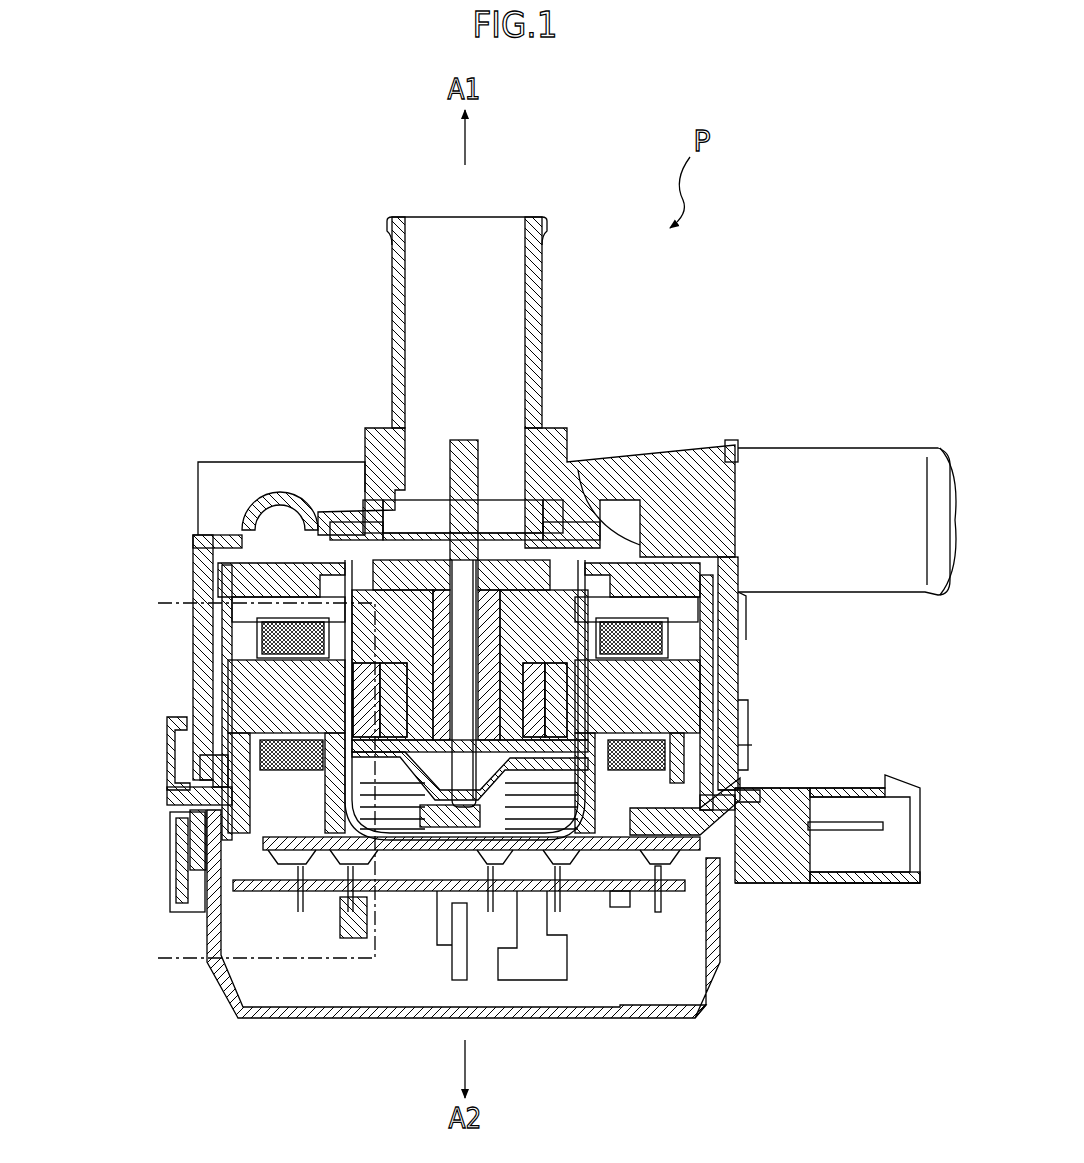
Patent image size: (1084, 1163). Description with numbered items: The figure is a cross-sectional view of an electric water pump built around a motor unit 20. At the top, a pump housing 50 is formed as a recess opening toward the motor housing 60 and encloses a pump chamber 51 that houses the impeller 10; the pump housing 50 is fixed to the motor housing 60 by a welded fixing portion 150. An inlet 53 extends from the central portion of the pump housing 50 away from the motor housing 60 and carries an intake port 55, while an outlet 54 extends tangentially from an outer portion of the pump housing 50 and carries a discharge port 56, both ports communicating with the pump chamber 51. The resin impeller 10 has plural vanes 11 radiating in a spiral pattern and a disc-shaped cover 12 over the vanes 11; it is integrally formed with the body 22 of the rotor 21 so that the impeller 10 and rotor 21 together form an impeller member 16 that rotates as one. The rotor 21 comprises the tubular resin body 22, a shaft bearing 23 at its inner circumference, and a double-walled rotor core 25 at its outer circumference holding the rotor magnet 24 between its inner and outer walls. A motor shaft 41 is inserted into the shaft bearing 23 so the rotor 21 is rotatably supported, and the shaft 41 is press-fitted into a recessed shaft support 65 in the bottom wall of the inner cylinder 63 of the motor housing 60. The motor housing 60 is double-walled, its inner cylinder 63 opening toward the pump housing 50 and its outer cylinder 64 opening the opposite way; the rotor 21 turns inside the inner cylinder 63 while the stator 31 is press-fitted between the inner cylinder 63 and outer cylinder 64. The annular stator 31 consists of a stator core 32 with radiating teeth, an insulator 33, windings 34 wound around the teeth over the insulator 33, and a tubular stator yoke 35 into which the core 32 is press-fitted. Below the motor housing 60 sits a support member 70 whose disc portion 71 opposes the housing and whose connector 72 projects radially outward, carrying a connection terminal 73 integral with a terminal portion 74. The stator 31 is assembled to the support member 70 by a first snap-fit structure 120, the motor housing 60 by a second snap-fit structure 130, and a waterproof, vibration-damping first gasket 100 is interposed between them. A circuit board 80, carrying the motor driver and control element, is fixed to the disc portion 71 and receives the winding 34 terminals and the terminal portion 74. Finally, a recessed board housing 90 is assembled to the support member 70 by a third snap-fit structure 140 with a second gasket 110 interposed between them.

The impeller 10 is at (500, 485).
The vanes 11 is at (628, 510).
The cover 12 is at (576, 462).
The impeller member 16 is at (318, 556).
The motor unit 20 is at (95, 610).
The rotor 21 is at (240, 680).
The body 22 is at (600, 600).
The shaft bearing 23 is at (600, 640).
The rotor magnet 24 is at (560, 690).
The rotor core 25 is at (560, 702).
The stator 31 is at (232, 700).
The stator core 32 is at (265, 635).
The insulator 33 is at (235, 600).
The windings 34 is at (200, 533).
The stator yoke 35 is at (232, 632).
The motor shaft 41 is at (436, 490).
The pump housing 50 is at (745, 470).
The pump chamber 51 is at (335, 490).
The inlet 53 is at (542, 300).
The outlet 54 is at (858, 448).
The intake port 55 is at (508, 214).
The discharge port 56 is at (945, 450).
The motor housing 60 is at (745, 720).
The inner cylinder 63 is at (740, 735).
The outer cylinder 64 is at (740, 748).
The shaft support 65 is at (415, 820).
The support member 70 is at (920, 812).
The disc portion 71 is at (598, 856).
The connector 72 is at (820, 884).
The connection terminal 73 is at (862, 832).
The terminal portion 74 is at (660, 895).
The circuit board 80 is at (320, 895).
The board housing 90 is at (315, 1022).
The first gasket 100 is at (758, 850).
The second gasket 110 is at (725, 900).
The first snap-fit structure 120 is at (190, 792).
The second snap-fit structure 130 is at (185, 748).
The third snap-fit structure 140 is at (175, 856).
The welded fixing portion 150 is at (745, 605).